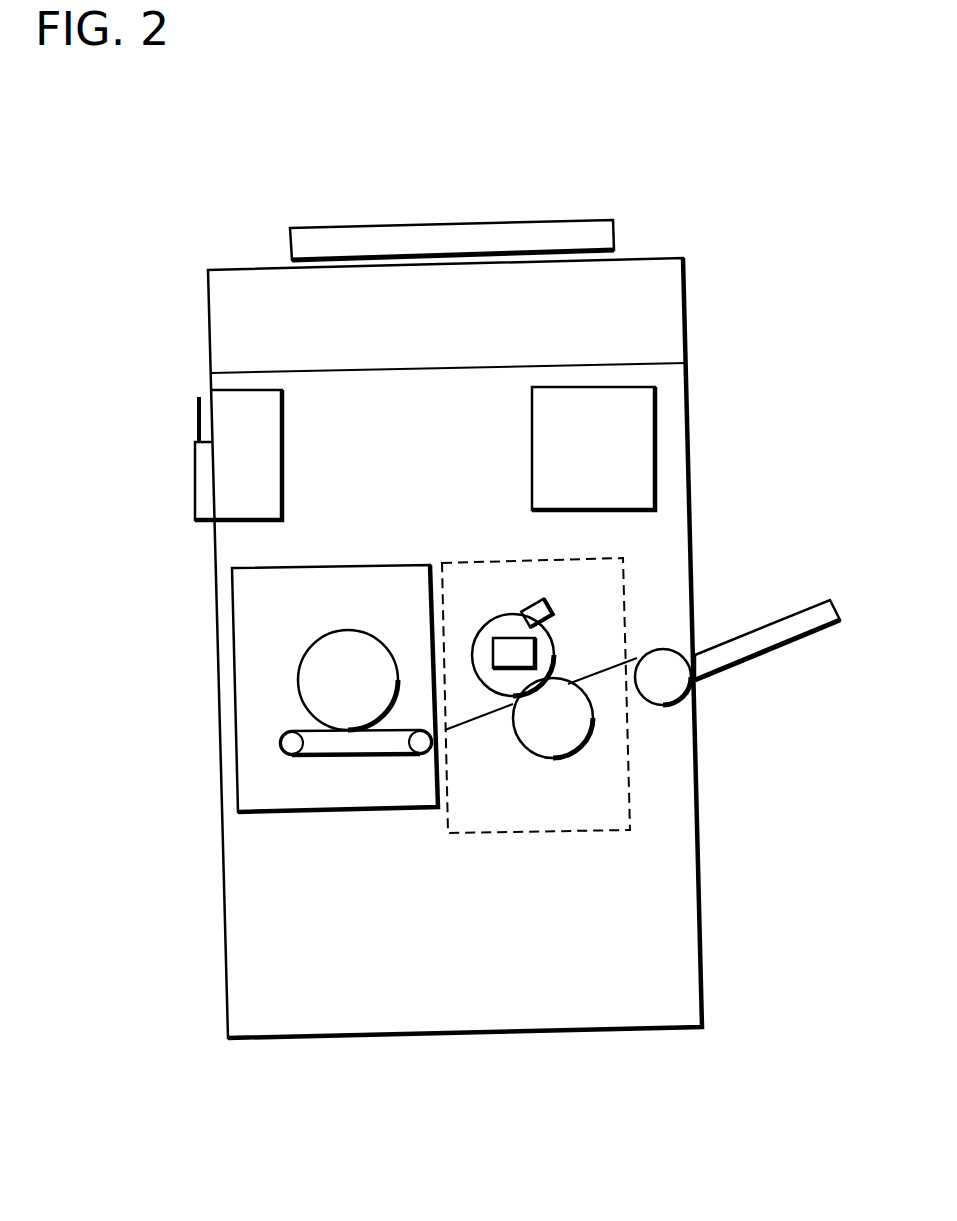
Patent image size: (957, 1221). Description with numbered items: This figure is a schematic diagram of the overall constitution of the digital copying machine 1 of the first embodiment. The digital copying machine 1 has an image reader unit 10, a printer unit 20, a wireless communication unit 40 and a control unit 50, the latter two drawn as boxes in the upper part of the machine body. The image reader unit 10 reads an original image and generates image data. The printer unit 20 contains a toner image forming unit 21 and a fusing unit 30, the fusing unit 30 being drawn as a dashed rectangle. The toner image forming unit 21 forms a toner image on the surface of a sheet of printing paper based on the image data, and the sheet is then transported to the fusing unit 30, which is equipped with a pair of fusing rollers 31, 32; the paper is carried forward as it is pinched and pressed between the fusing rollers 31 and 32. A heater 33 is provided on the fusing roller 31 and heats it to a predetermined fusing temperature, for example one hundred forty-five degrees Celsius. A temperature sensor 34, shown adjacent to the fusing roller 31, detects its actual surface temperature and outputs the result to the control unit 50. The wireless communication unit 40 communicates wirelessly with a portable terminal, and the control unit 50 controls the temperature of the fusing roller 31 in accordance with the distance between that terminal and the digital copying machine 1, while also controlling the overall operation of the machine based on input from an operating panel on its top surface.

The digital copying machine 1 is at (163, 181).
The image reader unit 10 is at (190, 335).
The printer unit 20 is at (197, 692).
The toner image forming unit 21 is at (363, 567).
The fusing unit 30 is at (507, 558).
The fusing roller 31 is at (500, 635).
The fusing roller 32 is at (550, 742).
The heater 33 is at (525, 650).
The temperature sensor 34 is at (537, 612).
The wireless communication unit 40 is at (245, 392).
The control unit 50 is at (608, 385).